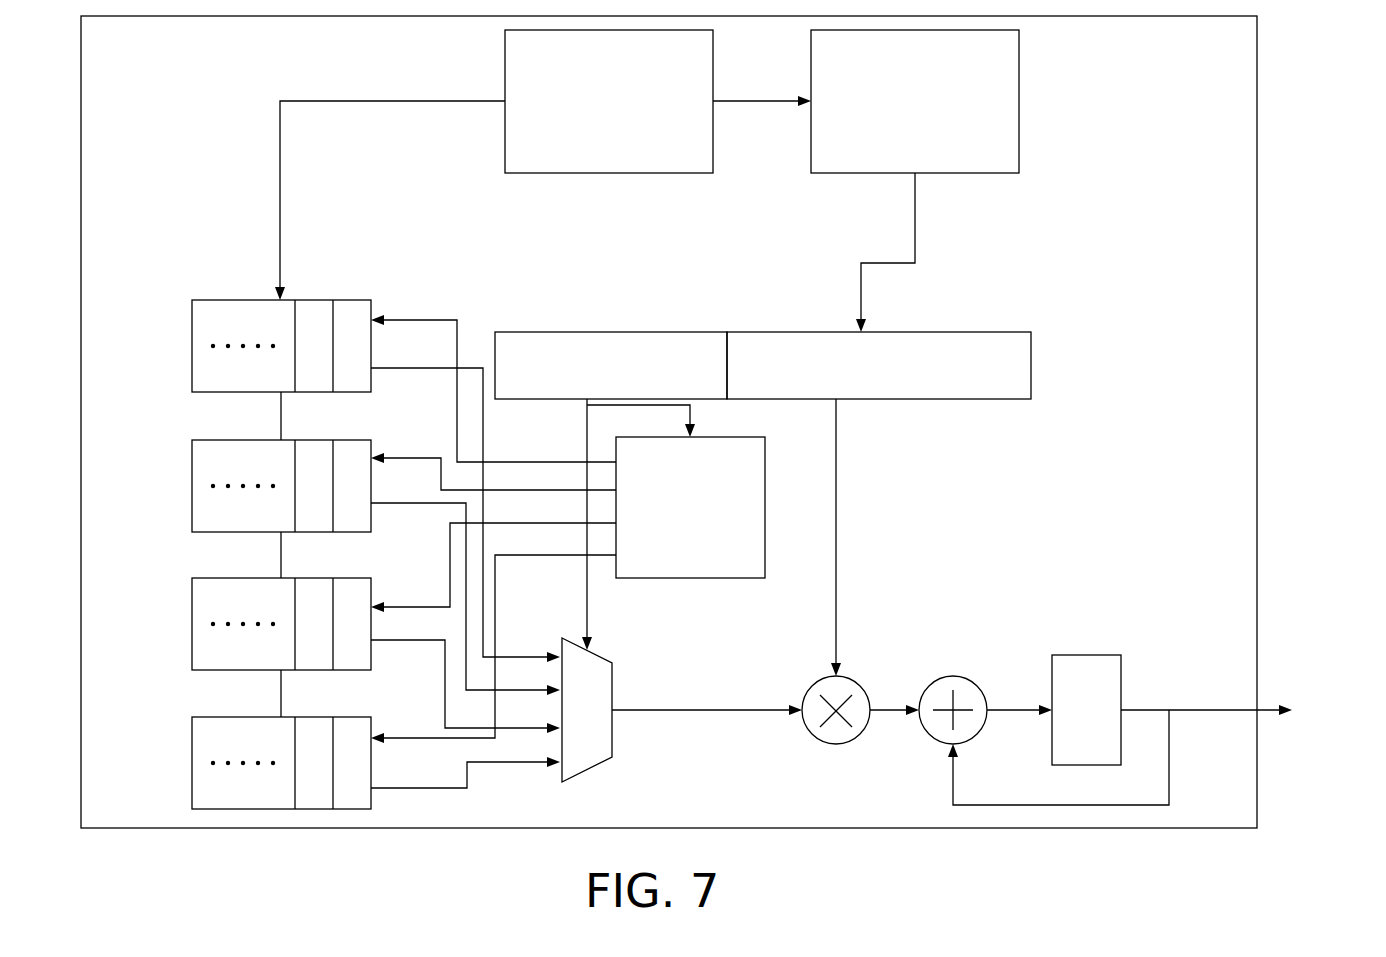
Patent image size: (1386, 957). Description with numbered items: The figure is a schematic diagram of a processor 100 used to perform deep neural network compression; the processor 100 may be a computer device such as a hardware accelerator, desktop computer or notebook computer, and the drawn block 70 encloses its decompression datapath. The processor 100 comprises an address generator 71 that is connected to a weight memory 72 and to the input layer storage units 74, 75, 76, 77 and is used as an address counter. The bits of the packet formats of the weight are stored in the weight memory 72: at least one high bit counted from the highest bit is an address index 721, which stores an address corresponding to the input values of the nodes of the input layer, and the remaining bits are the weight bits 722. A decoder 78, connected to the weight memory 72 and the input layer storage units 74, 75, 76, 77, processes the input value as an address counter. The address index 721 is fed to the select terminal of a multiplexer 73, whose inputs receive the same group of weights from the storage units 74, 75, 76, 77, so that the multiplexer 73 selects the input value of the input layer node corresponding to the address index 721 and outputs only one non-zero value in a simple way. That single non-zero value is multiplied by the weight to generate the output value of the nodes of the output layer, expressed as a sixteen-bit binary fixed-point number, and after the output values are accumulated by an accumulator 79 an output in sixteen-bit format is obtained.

The processor 100 is at (1257, 130).
The multiply-accumulate circuit 70 is at (1171, 262).
The address generator 71 is at (626, 117).
The weight memory 72 is at (932, 117).
The address index 721 is at (595, 331).
The weight bits 722 is at (1010, 331).
The multiplexer 73 is at (603, 653).
The input layer storage unit 74 is at (181, 350).
The input layer storage unit 75 is at (181, 487).
The input layer storage unit 76 is at (181, 626).
The input layer storage unit 77 is at (181, 765).
The decoder 78 is at (735, 580).
The accumulator 79 is at (1090, 655).